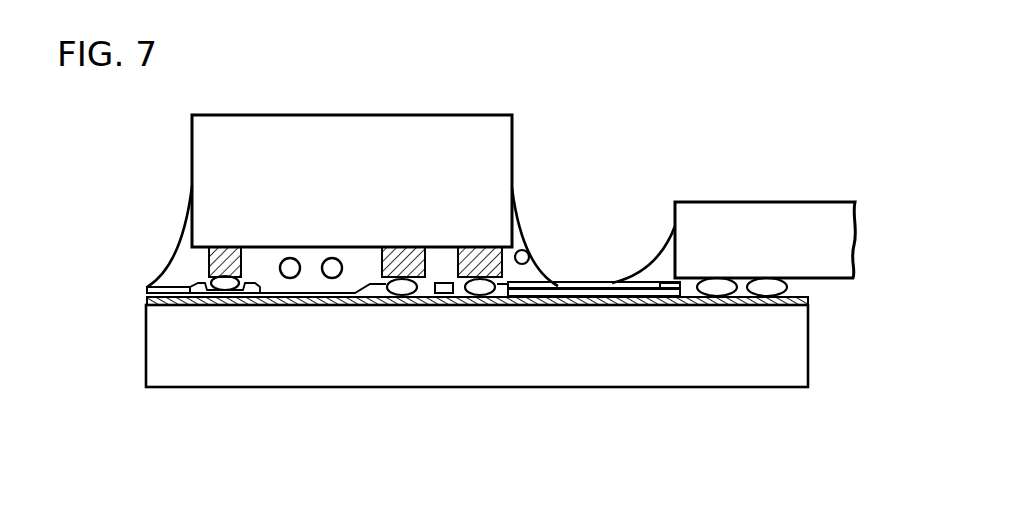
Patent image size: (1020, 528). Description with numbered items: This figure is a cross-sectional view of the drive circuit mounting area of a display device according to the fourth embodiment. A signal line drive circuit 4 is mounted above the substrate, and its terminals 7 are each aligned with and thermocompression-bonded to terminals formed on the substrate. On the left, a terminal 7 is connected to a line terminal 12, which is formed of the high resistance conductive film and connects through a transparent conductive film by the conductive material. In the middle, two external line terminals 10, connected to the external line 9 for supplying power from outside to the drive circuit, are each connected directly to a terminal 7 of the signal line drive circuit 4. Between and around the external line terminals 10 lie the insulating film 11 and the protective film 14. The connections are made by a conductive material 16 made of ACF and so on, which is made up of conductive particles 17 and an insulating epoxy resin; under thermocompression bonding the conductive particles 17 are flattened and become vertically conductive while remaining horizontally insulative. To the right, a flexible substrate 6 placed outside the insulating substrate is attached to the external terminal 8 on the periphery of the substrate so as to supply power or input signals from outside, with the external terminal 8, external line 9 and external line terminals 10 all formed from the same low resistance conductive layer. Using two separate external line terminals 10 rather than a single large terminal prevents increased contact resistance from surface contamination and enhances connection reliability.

The signal line drive circuit 4 is at (452, 140).
The flexible substrate 6 is at (773, 213).
The terminal 7 is at (228, 247).
The external terminal 8 is at (800, 308).
The external line 9 is at (618, 305).
The external line terminal 10 is at (368, 308).
The insulating film 11 is at (577, 294).
The line terminal 12 is at (272, 308).
The protective film 14 is at (558, 284).
The conductive material 16 is at (505, 250).
The conductive particle 17 is at (513, 248).